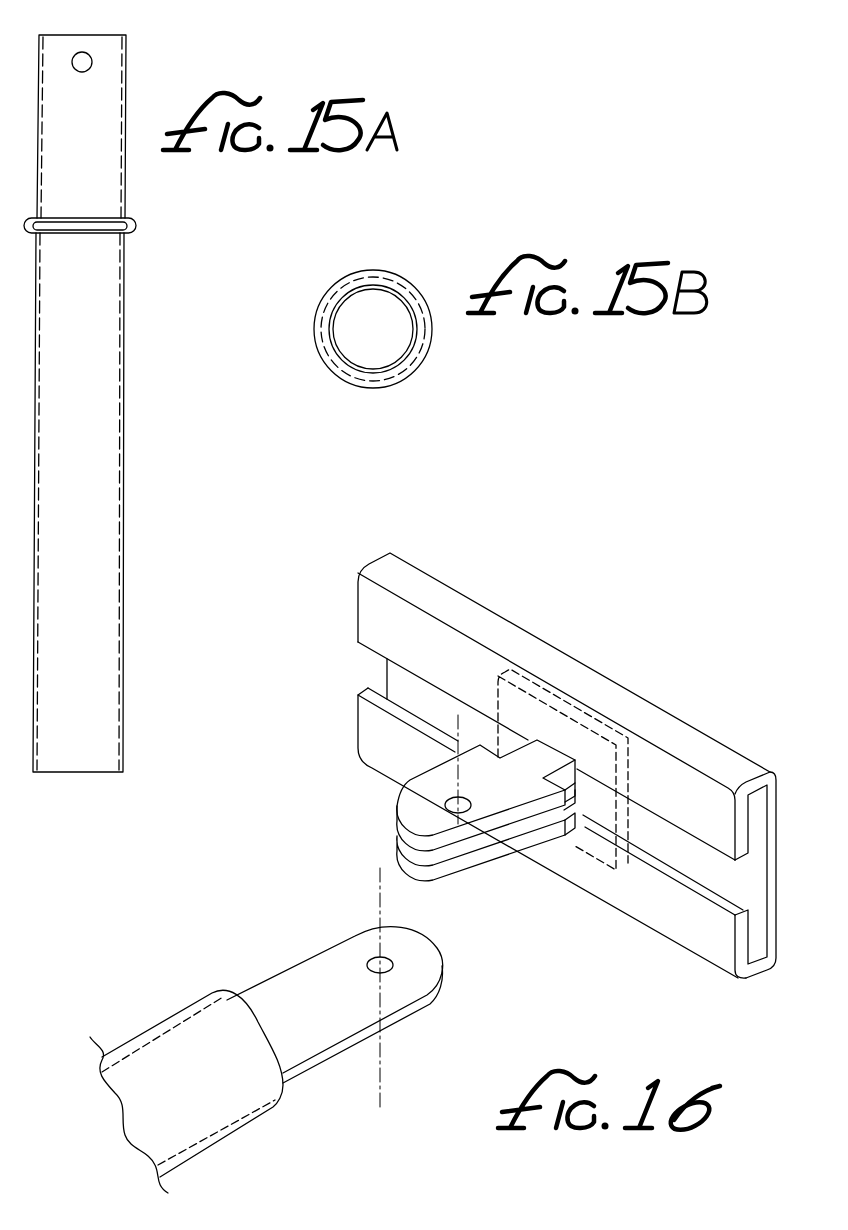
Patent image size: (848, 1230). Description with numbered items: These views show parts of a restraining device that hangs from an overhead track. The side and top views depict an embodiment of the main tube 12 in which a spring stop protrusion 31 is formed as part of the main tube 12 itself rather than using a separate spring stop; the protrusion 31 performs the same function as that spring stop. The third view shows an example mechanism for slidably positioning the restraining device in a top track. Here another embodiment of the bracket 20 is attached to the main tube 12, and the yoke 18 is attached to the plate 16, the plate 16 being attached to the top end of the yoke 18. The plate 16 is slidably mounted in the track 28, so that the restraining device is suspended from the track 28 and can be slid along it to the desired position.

In FIG. 15A, the strap 12 is at (166, 292).
In FIG. 15B, the strap 12 is at (459, 368).
In FIG. 16, the strap 12 is at (198, 1117).
In FIG. 15A, the ring 31 is at (137, 224).
In FIG. 16, the plate 16 is at (603, 810).
In FIG. 16, the clevis 18 is at (508, 835).
In FIG. 16, the tongue 20 is at (410, 1005).
In FIG. 16, the channel bar 28 is at (708, 927).